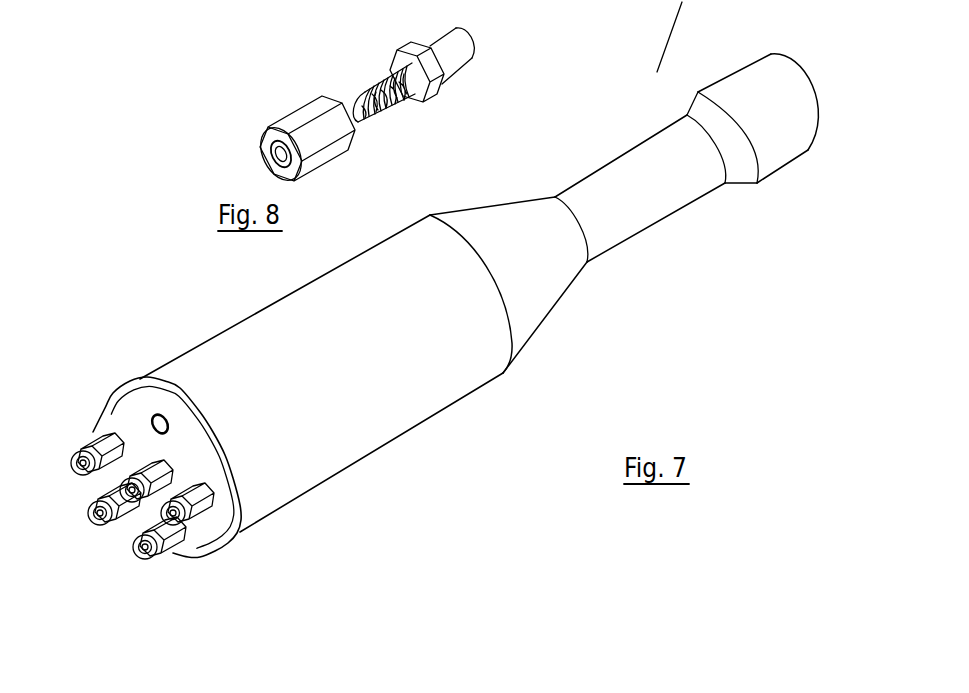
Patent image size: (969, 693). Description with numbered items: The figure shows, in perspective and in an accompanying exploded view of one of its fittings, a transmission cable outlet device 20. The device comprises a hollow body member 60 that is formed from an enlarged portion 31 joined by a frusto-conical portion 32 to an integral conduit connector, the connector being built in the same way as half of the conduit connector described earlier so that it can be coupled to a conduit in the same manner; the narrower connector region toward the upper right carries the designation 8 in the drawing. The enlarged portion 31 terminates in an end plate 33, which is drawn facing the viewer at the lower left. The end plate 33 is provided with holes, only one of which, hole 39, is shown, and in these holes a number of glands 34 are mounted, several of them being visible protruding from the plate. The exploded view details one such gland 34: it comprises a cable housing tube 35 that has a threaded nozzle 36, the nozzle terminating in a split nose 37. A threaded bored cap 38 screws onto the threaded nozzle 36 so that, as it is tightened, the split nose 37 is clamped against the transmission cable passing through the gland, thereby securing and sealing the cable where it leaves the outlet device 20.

In FIG. 7, the end cap 8 is at (738, 60).
In FIG. 7, the transmission cable outlet device 20 is at (602, 292).
In FIG. 7, the enlarged portion 31 is at (477, 375).
In FIG. 7, the frusto-conical portion 32 is at (542, 302).
In FIG. 7, the end plate 33 is at (203, 537).
In FIG. 7, the gland 34 is at (221, 503).
In FIG. 7, the hole 39 is at (152, 418).
In FIG. 7, the hollow body member 60 is at (658, 222).
In FIG. 8, the cable housing tube 35 is at (452, 63).
In FIG. 8, the threaded nozzle 36 is at (418, 103).
In FIG. 8, the split nose 37 is at (383, 121).
In FIG. 8, the threaded bored cap 38 is at (333, 162).